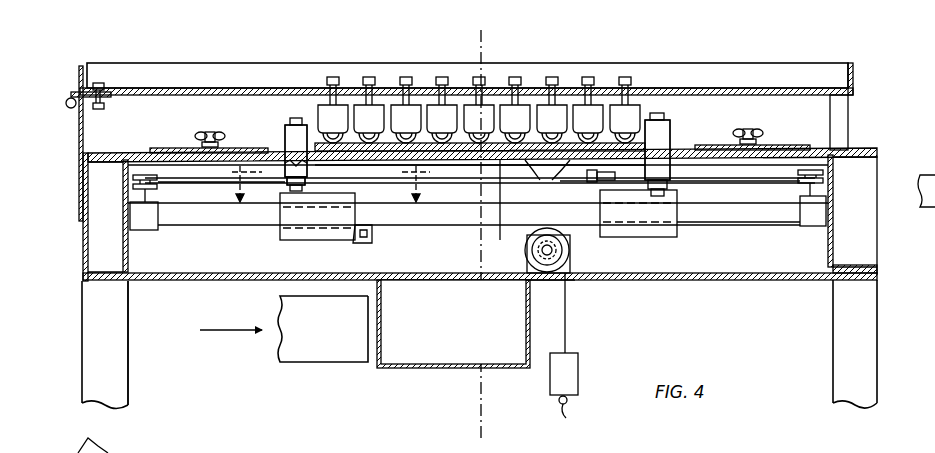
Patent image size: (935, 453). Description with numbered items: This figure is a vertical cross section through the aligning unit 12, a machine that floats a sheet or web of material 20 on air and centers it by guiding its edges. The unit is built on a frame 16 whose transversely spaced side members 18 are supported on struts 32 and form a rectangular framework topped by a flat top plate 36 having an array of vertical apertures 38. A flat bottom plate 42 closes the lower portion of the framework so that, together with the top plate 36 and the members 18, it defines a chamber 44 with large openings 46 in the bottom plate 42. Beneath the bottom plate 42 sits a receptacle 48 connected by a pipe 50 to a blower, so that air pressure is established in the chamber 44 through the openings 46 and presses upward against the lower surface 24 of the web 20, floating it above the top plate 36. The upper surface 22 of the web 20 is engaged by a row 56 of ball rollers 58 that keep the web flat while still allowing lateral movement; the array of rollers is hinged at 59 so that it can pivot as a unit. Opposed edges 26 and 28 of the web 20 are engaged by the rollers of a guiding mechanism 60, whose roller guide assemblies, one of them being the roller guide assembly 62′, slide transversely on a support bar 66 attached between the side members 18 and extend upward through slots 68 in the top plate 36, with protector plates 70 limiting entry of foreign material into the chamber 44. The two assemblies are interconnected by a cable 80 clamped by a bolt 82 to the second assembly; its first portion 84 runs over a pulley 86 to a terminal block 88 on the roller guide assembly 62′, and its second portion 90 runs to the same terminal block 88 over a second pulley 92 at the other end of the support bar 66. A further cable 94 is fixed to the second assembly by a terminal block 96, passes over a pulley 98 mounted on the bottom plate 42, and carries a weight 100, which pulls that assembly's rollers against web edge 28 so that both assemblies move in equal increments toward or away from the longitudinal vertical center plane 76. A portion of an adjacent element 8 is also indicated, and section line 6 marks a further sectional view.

The section line 6 is at (331, 182).
The adjacent unit 8 is at (926, 213).
The aligning unit 12 is at (222, 48).
The frame 16 is at (135, 380).
The side members 18 is at (117, 248).
The web of material 20 is at (502, 206).
The upper surface 22 is at (613, 140).
The lower surface 24 is at (333, 164).
The web edge 26 is at (652, 150).
The web edge 28 is at (296, 140).
The struts 32 is at (100, 358).
The top plate 36 is at (860, 150).
The vertical apertures 38 is at (547, 181).
The bottom plate 42 is at (670, 281).
The chamber 44 is at (405, 325).
The openings 46 is at (522, 282).
The receptacle 48 is at (421, 356).
The pipe 50 is at (320, 348).
The rows 56 is at (750, 71).
The ball rollers 58 is at (403, 138).
The hinge 59 is at (69, 99).
The guiding mechanism 60 is at (490, 56).
The roller guide assembly 62′ is at (658, 241).
The support bar 66 is at (765, 224).
The slots 68 is at (275, 150).
The protector plates 70 is at (163, 149).
The center plane 76 is at (479, 57).
The cable 80 is at (450, 186).
The bolt 82 is at (298, 178).
The first cable portion 84 is at (212, 185).
The pulley 86 is at (145, 174).
The terminal block 88 is at (598, 185).
The second cable portion 90 is at (690, 182).
The second pulley 92 is at (813, 169).
The cable 94 is at (570, 336).
The terminal block 96 is at (348, 244).
The pulley 98 is at (553, 262).
The weight 100 is at (575, 391).